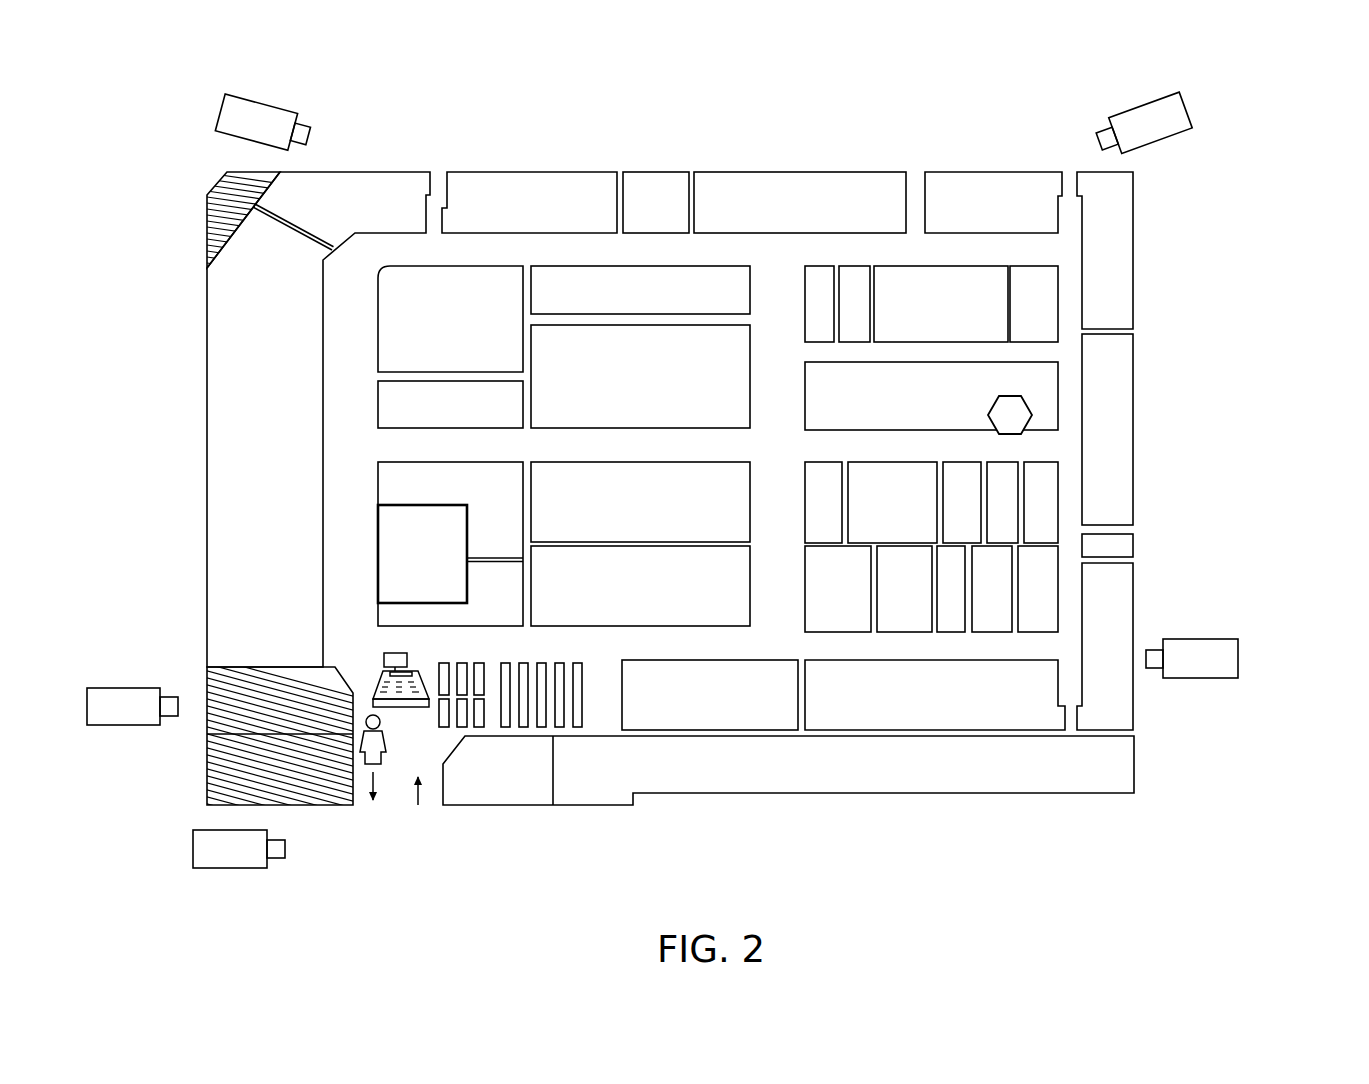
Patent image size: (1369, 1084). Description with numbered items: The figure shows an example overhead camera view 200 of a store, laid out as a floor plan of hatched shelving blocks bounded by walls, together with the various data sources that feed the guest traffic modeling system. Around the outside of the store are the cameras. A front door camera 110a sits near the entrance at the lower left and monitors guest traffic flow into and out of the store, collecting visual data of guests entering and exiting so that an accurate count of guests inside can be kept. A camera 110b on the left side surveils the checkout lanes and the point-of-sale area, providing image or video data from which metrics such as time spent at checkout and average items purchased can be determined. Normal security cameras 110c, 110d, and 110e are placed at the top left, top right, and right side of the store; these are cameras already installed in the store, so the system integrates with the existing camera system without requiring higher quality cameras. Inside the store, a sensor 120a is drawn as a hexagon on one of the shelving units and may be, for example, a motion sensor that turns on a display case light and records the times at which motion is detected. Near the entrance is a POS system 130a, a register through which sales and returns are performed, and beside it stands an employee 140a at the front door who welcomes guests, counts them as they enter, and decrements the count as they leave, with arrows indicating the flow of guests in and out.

The overhead camera view 200 is at (174, 148).
The front door camera 110a is at (193, 848).
The camera 110b is at (122, 688).
The normal security camera 110c is at (262, 100).
The normal security camera 110d is at (1192, 114).
The normal security camera 110e is at (1239, 658).
The sensor 120a is at (1012, 405).
The POS system 130a is at (407, 660).
The employee 140a is at (386, 746).